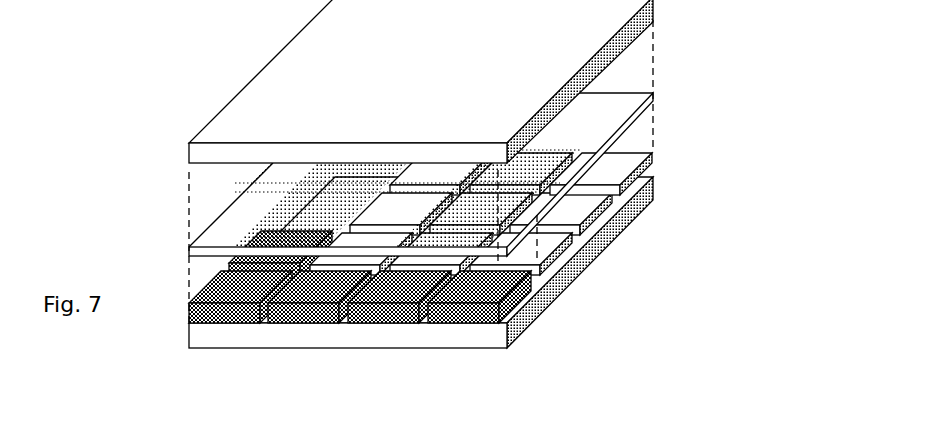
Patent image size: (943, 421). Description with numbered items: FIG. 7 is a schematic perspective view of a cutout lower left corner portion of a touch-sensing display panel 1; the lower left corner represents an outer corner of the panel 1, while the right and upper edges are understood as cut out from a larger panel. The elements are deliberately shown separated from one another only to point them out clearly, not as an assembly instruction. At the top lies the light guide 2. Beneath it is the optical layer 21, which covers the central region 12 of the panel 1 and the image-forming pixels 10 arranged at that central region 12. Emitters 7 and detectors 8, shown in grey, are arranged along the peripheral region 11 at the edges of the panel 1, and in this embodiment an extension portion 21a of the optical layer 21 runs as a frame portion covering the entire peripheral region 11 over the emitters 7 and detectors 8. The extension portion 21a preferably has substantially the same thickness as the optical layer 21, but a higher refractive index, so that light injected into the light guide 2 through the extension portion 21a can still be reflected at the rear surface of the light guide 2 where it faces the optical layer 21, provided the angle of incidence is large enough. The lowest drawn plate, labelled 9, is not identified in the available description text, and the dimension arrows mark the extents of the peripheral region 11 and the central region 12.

The touch-sensing display panel 1 is at (692, 92).
The light guide 2 is at (518, 37).
The optical layer 21 is at (599, 131).
The extension portion 21a is at (230, 230).
The image-forming pixels 10 is at (620, 165).
The emitters 7 is at (280, 257).
The detectors 8 is at (481, 194).
The base substrate 9 is at (468, 337).
The peripheral region 11 is at (167, 353).
The central region 12 is at (373, 400).